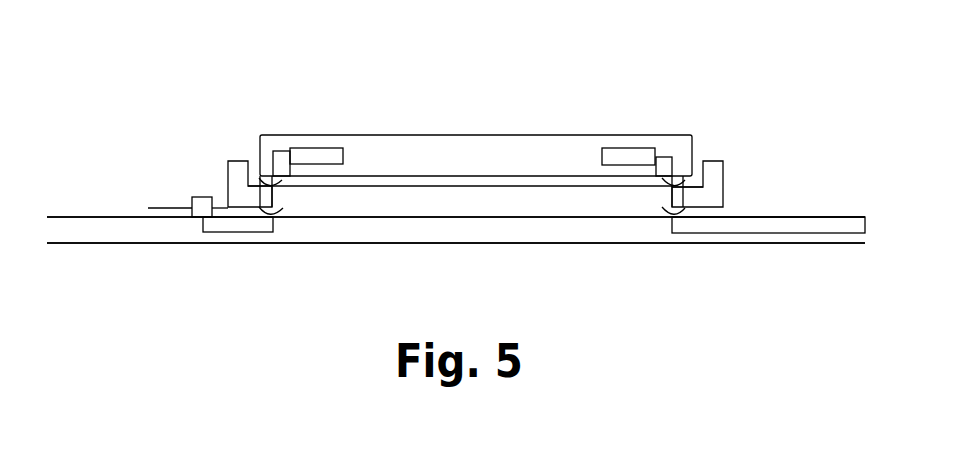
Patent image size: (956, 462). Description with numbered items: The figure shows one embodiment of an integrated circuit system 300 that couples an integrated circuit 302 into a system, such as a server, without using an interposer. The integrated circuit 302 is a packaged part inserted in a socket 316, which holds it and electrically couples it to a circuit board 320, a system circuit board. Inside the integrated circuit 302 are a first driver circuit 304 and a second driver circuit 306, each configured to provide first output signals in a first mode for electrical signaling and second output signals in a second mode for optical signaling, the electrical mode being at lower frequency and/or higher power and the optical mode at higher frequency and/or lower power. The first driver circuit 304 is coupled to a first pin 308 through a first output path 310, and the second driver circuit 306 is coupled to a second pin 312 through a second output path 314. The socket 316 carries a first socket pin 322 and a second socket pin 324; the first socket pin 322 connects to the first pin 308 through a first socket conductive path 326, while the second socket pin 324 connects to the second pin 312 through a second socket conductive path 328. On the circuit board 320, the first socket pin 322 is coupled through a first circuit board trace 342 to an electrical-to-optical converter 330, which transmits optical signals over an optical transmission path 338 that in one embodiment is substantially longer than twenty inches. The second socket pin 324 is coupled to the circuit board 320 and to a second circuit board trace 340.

The integrated circuit system 300 is at (693, 58).
The integrated circuit 302 is at (467, 143).
The first driver circuit 304 is at (313, 151).
The second driver circuit 306 is at (632, 150).
The first pin 308 is at (264, 181).
The first output path 310 is at (265, 184).
The second pin 312 is at (676, 182).
The second output path 314 is at (660, 154).
The socket 316 is at (725, 206).
The circuit board 320 is at (456, 231).
The first socket pin 322 is at (231, 194).
The second socket pin 324 is at (690, 205).
The first socket conductive path 326 is at (264, 182).
The second socket conductive path 328 is at (680, 204).
The electrical-to-optical converter 330 is at (194, 200).
The optical transmission path 338 is at (150, 208).
The second circuit board trace 340 is at (787, 233).
The first circuit board trace 342 is at (232, 232).